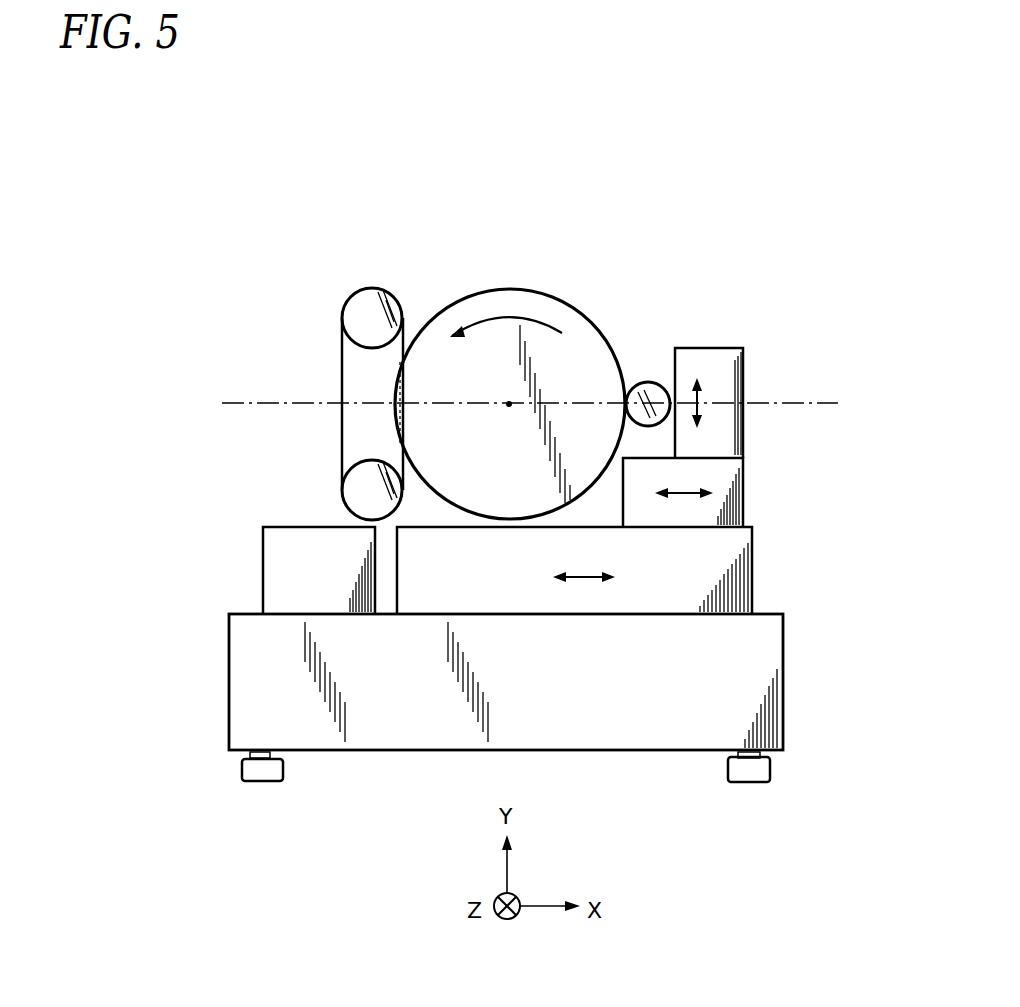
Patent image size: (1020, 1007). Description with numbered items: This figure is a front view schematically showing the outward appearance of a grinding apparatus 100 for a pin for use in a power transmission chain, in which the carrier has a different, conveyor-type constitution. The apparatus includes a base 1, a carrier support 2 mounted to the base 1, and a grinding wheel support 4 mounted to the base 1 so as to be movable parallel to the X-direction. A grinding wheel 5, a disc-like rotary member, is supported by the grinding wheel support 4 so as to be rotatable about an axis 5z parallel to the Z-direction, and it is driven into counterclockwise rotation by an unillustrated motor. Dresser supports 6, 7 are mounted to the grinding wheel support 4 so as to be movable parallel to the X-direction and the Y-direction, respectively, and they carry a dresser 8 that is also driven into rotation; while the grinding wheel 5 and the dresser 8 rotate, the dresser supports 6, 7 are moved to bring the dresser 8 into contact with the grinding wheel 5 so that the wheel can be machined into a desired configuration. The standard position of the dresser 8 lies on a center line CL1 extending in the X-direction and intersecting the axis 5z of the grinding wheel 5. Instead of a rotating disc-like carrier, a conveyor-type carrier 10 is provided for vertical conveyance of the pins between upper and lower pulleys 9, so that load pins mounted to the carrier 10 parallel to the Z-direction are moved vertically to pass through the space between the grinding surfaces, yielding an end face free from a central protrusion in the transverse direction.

The base 1 is at (755, 686).
The carrier support 2 is at (282, 565).
The grinding wheel support 4 is at (752, 572).
The grinding wheel 5 is at (537, 290).
The axis of the grinding wheel 5z is at (509, 402).
The dresser support 6 is at (745, 495).
The dresser support 7 is at (718, 347).
The dresser 8 is at (648, 380).
The pulleys 9 is at (347, 298).
The conveyor-type carrier 10 is at (413, 335).
The grinding apparatus 100 is at (378, 212).
The center line CL1 is at (800, 403).